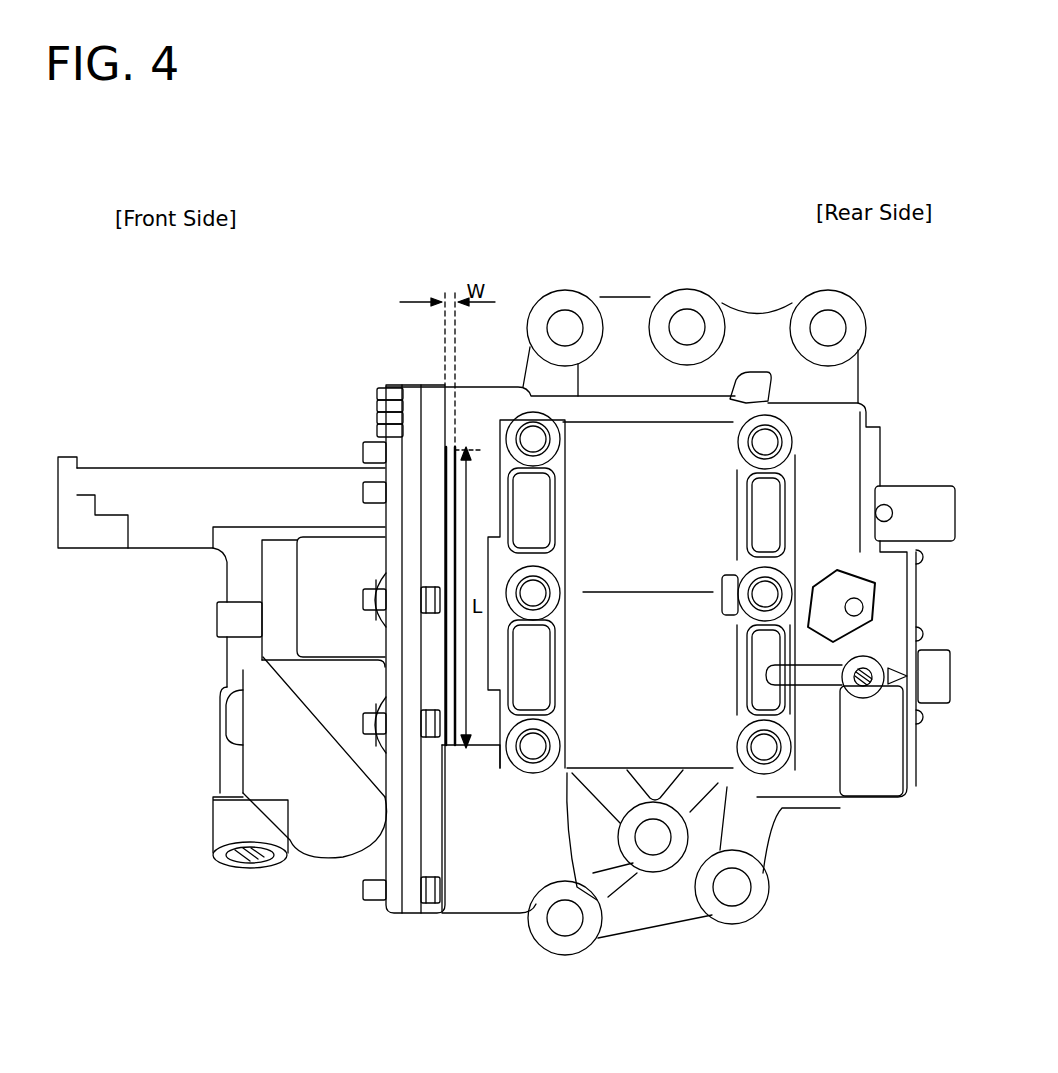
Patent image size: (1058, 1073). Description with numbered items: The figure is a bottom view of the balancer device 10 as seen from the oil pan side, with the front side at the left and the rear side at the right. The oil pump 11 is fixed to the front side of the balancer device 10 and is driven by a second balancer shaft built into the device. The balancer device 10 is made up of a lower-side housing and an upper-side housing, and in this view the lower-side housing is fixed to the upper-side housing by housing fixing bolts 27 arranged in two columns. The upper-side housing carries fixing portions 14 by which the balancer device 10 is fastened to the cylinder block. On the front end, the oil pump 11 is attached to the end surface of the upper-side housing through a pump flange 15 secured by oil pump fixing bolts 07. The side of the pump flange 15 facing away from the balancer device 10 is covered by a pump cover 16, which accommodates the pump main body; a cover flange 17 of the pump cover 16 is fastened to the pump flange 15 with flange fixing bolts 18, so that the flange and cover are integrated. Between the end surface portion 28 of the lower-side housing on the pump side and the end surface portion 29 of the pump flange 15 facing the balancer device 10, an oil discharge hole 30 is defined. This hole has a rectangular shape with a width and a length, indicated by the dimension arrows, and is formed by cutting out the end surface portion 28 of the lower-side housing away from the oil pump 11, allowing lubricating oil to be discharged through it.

The balancer device 10 is at (631, 288).
The oil pump 11 is at (204, 660).
The fixing portions 14 is at (568, 312).
The pump flange 15 is at (437, 415).
The pump cover 16 is at (262, 490).
The cover flange 17 is at (385, 690).
The flange fixing bolts 18 is at (428, 612).
The housing fixing bolts 27 is at (550, 440).
The end surface portion 28 is at (457, 507).
The end surface portion 29 is at (440, 506).
The oil discharge hole 30 is at (452, 556).
The oil pump fixing bolts 07 is at (377, 420).